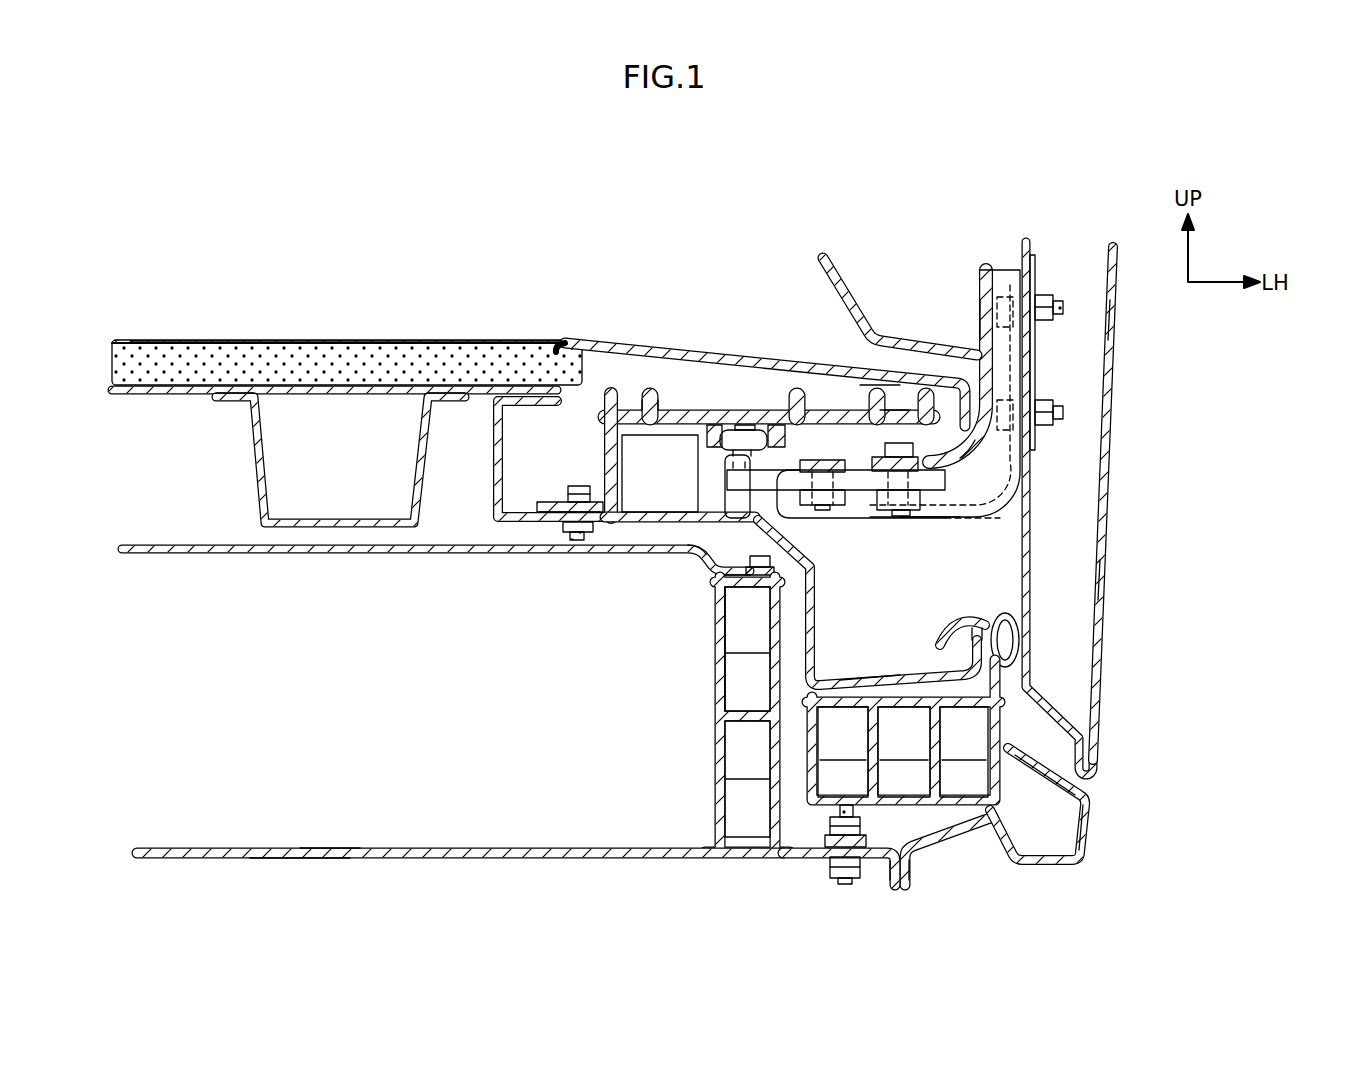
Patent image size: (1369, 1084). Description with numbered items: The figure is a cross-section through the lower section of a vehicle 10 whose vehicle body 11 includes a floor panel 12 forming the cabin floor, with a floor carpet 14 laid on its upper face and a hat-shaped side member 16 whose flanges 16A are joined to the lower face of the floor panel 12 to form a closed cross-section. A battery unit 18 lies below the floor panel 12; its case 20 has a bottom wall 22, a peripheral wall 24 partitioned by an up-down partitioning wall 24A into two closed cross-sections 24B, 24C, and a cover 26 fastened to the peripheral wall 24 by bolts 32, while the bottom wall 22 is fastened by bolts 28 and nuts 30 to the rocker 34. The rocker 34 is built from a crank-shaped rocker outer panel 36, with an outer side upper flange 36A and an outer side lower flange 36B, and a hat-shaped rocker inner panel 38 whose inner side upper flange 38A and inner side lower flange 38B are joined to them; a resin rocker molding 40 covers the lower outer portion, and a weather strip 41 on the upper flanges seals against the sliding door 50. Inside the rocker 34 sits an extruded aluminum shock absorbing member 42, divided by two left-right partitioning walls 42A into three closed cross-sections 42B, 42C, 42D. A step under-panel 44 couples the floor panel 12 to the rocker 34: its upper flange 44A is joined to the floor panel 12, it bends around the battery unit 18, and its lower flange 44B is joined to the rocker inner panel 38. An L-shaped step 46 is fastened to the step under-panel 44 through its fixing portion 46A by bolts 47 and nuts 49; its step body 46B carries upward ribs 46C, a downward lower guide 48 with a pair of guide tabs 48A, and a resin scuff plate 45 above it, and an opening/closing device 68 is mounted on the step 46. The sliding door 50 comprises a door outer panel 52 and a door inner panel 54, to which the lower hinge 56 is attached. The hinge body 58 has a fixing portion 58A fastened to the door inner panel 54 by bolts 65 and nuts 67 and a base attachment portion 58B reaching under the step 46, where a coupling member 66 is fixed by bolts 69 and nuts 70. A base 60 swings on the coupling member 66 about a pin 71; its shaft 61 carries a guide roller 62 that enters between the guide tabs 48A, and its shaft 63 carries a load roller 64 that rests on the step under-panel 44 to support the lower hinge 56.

The vehicle 10 is at (1208, 521).
The vehicle body 11 is at (363, 280).
The floor panel 12 is at (148, 395).
The floor carpet 14 is at (213, 336).
The side member 16 is at (262, 508).
The flanges 16A is at (230, 400).
The battery unit 18 is at (300, 862).
The case 20 is at (330, 858).
The bottom wall 22 is at (470, 858).
The peripheral wall 24 is at (713, 766).
The up-down partitioning wall 24A is at (745, 692).
The closed cross-section 24B is at (747, 649).
The closed cross-section 24C is at (747, 779).
The cover 26 is at (442, 553).
The bolts 28 is at (840, 868).
The nuts 30 is at (830, 823).
The bolts 32 is at (790, 560).
The rocker 34 is at (1010, 788).
The rocker outer panel 36 is at (1045, 861).
The outer side upper flange 36A is at (1020, 642).
The outer side lower flange 36B is at (906, 870).
The rocker inner panel 38 is at (800, 856).
The inner side upper flange 38A is at (950, 647).
The inner side lower flange 38B is at (888, 870).
The rocker molding 40 is at (1010, 815).
The weather strip 41 is at (990, 625).
The shock absorbing member 42 is at (1003, 733).
The left-right partitioning walls 42A is at (878, 775).
The closed cross-section 42B is at (843, 752).
The closed cross-section 42C is at (904, 752).
The closed cross-section 42D is at (964, 752).
The step under-panel 44 is at (818, 602).
The upper flange 44A is at (516, 406).
The lower flange 44B is at (868, 678).
The scuff plate 45 is at (565, 337).
The step 46 is at (672, 410).
The fixing portion 46A is at (557, 503).
The step body 46B is at (660, 526).
The ribs 46C is at (890, 418).
The bolts 47 is at (580, 487).
The lower guide 48 is at (650, 405).
The guide tabs 48A is at (697, 425).
The nuts 49 is at (560, 530).
The sliding door 50 is at (1118, 579).
The door outer panel 52 is at (1118, 335).
The door inner panel 54 is at (1032, 392).
The lower hinge 56 is at (965, 270).
The hinge body 58 is at (1000, 268).
The fixing portion 58A is at (985, 320).
The base attachment portion 58B is at (950, 520).
The base 60 is at (812, 450).
The shaft 61 is at (700, 460).
The guide roller 62 is at (730, 424).
The shaft 63 is at (718, 576).
The load roller 64 is at (700, 556).
The bolts 65 is at (1010, 322).
The coupling member 66 is at (870, 520).
The nuts 67 is at (1045, 297).
The opening/closing device 68 is at (612, 410).
The bolts 69 is at (955, 458).
The nuts 70 is at (905, 508).
The pin 71 is at (832, 462).